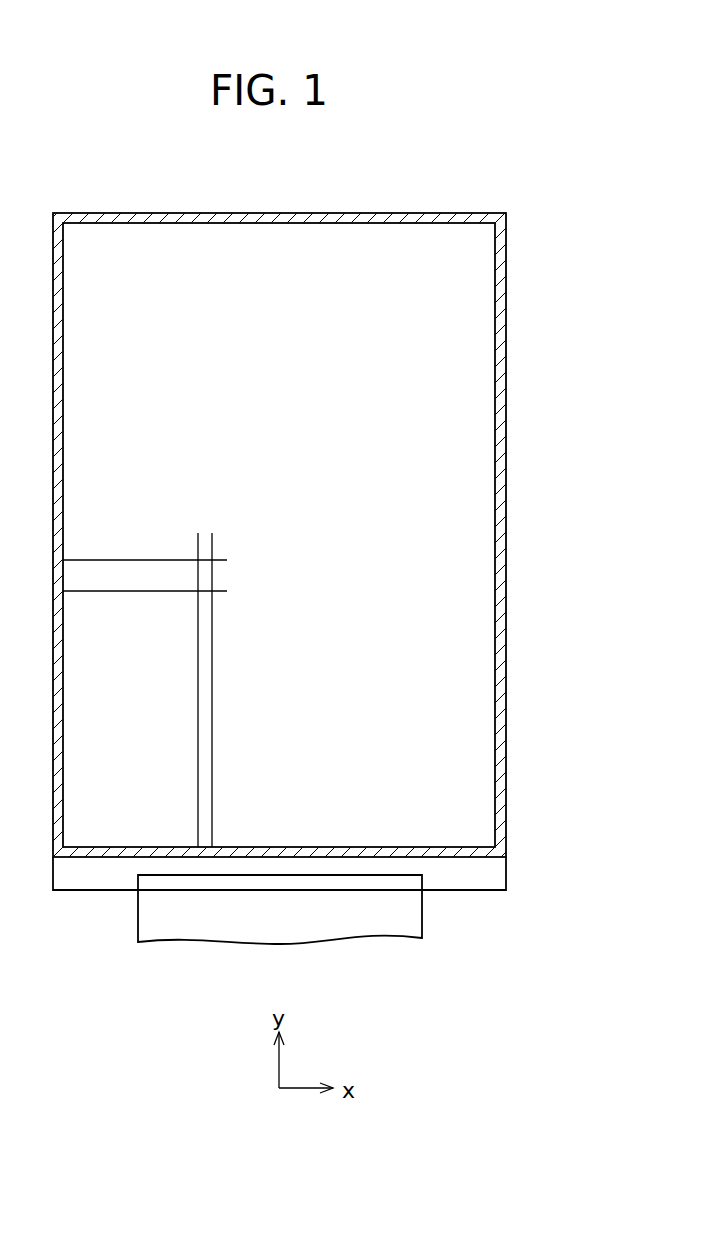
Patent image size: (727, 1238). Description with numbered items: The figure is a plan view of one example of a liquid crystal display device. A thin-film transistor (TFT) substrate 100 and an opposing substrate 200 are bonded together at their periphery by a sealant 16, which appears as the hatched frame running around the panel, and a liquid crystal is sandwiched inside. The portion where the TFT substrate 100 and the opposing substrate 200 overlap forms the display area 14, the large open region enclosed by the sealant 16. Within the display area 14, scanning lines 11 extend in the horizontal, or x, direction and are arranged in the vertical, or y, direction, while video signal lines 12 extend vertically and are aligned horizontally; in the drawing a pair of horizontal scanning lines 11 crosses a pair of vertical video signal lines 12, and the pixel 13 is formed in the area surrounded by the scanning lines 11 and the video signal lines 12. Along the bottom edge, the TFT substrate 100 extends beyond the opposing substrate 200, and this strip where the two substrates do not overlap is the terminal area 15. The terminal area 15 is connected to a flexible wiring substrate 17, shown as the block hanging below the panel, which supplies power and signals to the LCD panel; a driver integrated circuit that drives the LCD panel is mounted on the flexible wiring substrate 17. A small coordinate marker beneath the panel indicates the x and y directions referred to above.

The thin-film transistor (TFT) substrate 100 is at (333, 908).
The opposing substrate 200 is at (363, 535).
The scanning lines 11 is at (187, 668).
The video signal lines 12 is at (213, 645).
The pixel 13 is at (203, 577).
The display area 14 is at (460, 480).
The terminal area 15 is at (458, 880).
The sealant 16 is at (502, 540).
The flexible wiring substrate 17 is at (148, 909).